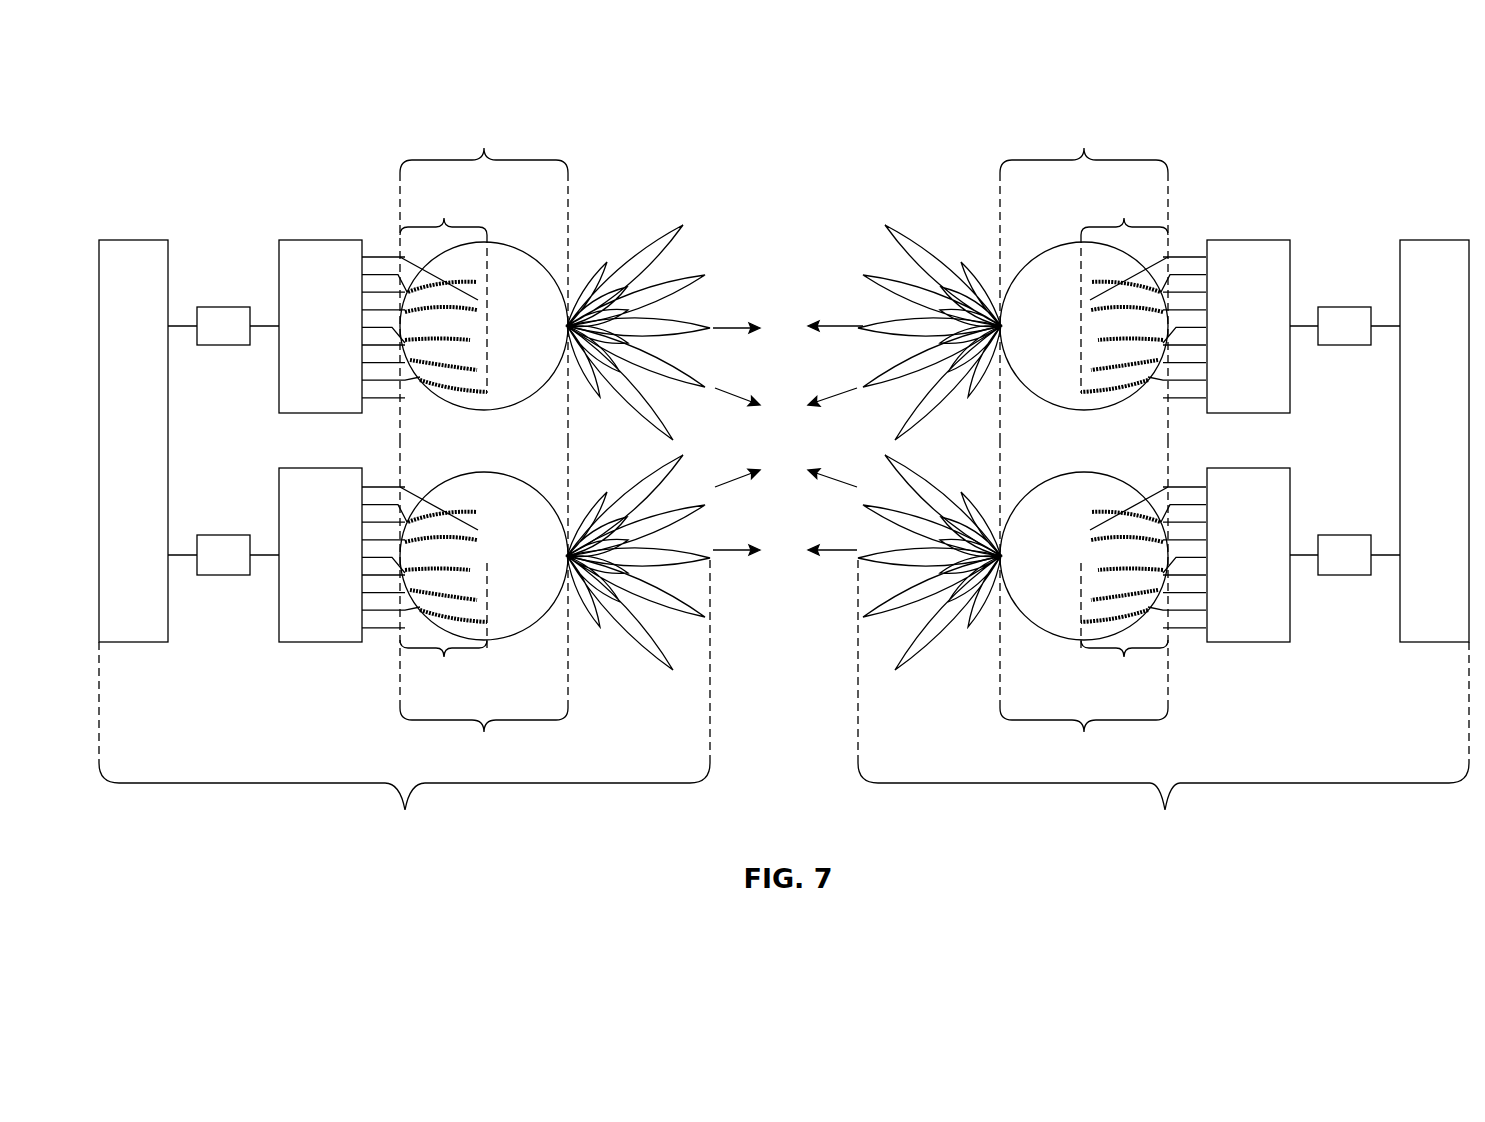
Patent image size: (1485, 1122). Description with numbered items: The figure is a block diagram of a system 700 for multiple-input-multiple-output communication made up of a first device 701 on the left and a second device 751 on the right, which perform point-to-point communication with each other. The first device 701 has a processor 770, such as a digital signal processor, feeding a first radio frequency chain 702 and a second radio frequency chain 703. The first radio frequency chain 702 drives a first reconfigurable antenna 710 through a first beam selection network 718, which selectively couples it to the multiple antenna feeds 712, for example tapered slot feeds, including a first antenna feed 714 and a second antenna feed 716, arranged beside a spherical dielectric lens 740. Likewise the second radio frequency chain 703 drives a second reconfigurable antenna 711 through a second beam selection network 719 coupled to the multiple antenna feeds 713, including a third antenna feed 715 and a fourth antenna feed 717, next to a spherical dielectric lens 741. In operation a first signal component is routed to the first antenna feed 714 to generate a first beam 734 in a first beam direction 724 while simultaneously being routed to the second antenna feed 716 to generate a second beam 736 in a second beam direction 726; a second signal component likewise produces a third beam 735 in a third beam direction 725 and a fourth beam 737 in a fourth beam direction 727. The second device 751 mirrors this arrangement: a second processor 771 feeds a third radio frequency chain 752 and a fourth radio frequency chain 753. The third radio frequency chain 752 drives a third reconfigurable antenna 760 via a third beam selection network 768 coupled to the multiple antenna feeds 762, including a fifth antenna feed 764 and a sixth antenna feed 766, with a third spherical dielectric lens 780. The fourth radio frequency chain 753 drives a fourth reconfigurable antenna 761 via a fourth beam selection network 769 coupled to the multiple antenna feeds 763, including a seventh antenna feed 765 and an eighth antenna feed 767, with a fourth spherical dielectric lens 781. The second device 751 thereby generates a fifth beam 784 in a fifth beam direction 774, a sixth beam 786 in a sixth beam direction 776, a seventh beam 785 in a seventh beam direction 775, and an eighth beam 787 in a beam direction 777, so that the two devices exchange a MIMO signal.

The system 700 is at (148, 76).
The first device 701 is at (404, 702).
The first radio frequency chain 702 is at (225, 307).
The second radio frequency chain 703 is at (225, 575).
The first reconfigurable antenna 710 is at (484, 276).
The second reconfigurable antenna 711 is at (484, 603).
The multiple antenna feeds 712 is at (443, 289).
The multiple antenna feeds 713 is at (443, 627).
The first antenna feed 714 is at (475, 290).
The third antenna feed 715 is at (405, 488).
The second antenna feed 716 is at (432, 390).
The fourth antenna feed 717 is at (473, 597).
The first beam selection network 718 is at (320, 240).
The second beam selection network 719 is at (320, 642).
The first beam direction 724 is at (730, 398).
The third beam direction 725 is at (737, 484).
The second beam direction 726 is at (728, 324).
The fourth beam direction 727 is at (728, 552).
The first beam 734 is at (670, 385).
The third beam 735 is at (630, 500).
The second beam 736 is at (680, 340).
The fourth beam 737 is at (655, 545).
The spherical dielectric lens 740 is at (538, 375).
The spherical dielectric lens 741 is at (538, 508).
The second device 751 is at (1163, 702).
The third radio frequency chain 752 is at (1345, 307).
The fourth radio frequency chain 753 is at (1345, 577).
The third reconfigurable antenna 760 is at (1084, 276).
The fourth reconfigurable antenna 761 is at (1084, 603).
The multiple antenna feeds 762 is at (1124, 289).
The multiple antenna feeds 763 is at (1124, 627).
The fifth antenna feed 764 is at (1102, 307).
The seventh antenna feed 765 is at (1110, 535).
The sixth antenna feed 766 is at (1088, 408).
The eighth antenna feed 767 is at (1110, 595).
The third beam selection network 768 is at (1245, 240).
The fourth beam selection network 769 is at (1250, 642).
The processor 770 is at (168, 436).
The second processor 771 is at (1400, 418).
The fifth beam direction 774 is at (838, 398).
The seventh beam direction 775 is at (832, 478).
The sixth beam direction 776 is at (840, 324).
The beam direction 777 is at (840, 552).
The third spherical dielectric lens 780 is at (1038, 375).
The fourth spherical dielectric lens 781 is at (1027, 520).
The fifth beam 784 is at (927, 372).
The seventh beam 785 is at (935, 518).
The sixth beam 786 is at (888, 320).
The eighth beam 787 is at (915, 555).